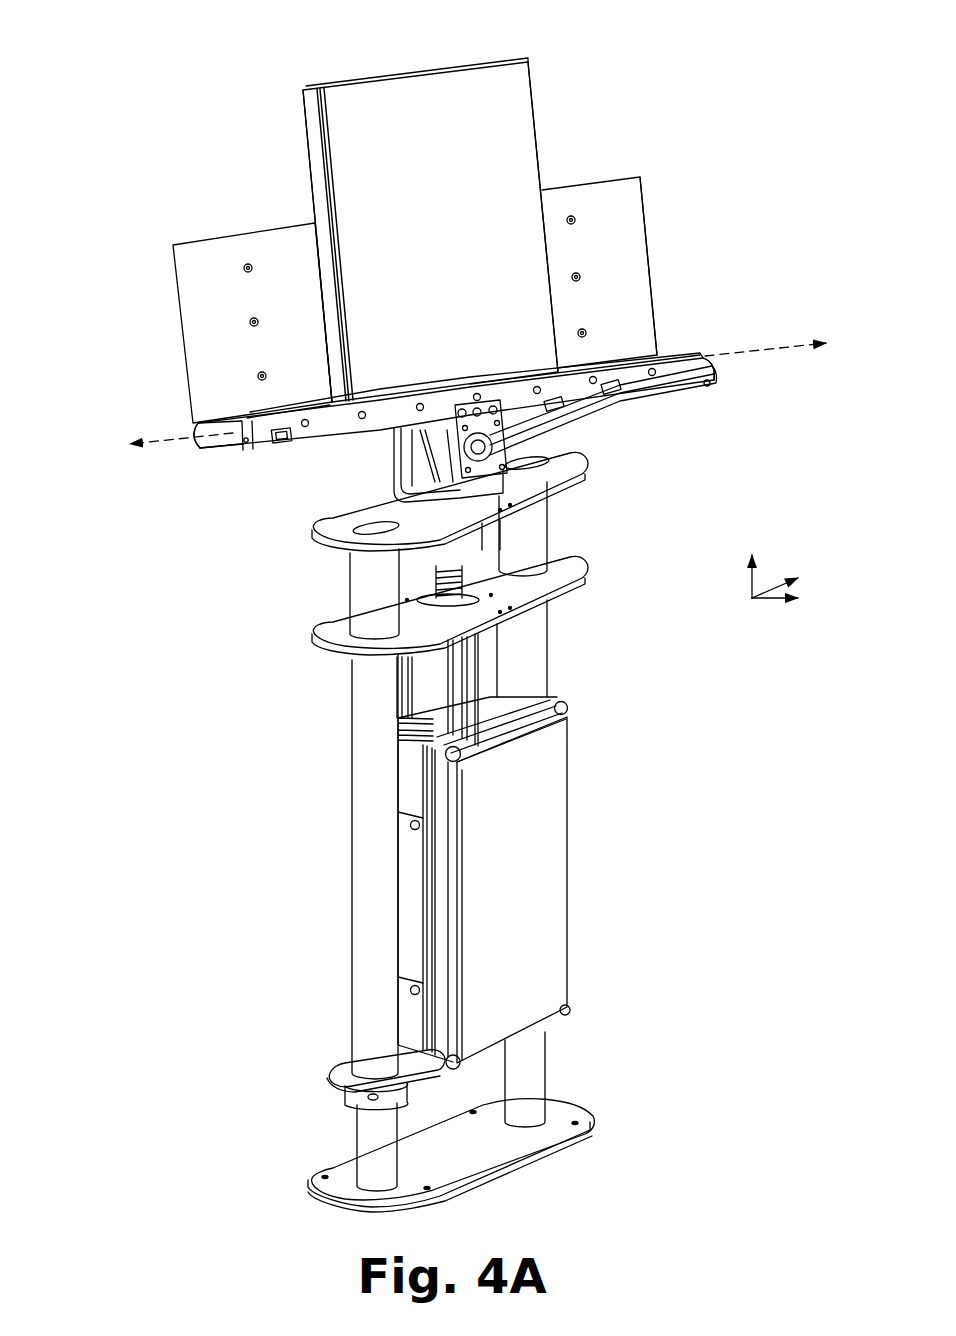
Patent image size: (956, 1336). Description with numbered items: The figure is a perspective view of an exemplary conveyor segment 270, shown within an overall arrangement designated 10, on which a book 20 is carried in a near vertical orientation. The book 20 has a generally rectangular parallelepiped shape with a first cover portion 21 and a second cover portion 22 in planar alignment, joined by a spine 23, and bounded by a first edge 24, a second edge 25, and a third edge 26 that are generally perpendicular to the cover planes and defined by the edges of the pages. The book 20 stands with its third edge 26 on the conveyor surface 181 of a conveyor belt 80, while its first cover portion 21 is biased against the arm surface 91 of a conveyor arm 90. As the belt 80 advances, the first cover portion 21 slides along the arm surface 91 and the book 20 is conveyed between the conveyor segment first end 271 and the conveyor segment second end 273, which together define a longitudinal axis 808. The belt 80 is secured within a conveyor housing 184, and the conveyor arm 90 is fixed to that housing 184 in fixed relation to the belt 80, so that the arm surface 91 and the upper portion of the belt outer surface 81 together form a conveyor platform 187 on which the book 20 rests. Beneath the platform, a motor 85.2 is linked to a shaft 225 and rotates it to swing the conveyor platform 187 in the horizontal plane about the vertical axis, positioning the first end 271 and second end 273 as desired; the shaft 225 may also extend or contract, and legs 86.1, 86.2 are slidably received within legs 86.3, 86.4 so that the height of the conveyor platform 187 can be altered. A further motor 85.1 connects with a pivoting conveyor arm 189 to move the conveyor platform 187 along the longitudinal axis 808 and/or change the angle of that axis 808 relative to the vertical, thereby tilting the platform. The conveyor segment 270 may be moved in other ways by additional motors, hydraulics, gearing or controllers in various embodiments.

The mounting apparatus 10 is at (686, 46).
The book 20 is at (420, 201).
The first cover portion 21 is at (304, 135).
The second cover portion 22 is at (410, 108).
The spine 23 is at (313, 102).
The first edge 24 is at (480, 62).
The second edge 25 is at (533, 104).
The third edge 26 is at (448, 395).
The conveyor belt 80 is at (227, 446).
The belt outer surface 81 is at (225, 423).
The motor 85.1 is at (578, 472).
The motor 85.2 is at (567, 587).
The leg 86.1 is at (365, 586).
The leg 86.2 is at (535, 533).
The leg 86.3 is at (365, 718).
The leg 86.4 is at (527, 655).
The conveyor arm 90 is at (625, 241).
The arm surface 91 is at (623, 212).
The conveyor surface 181 is at (228, 423).
The conveyor housing 184 is at (627, 373).
The conveyor platform 187 is at (655, 241).
The conveyor arm 189 is at (627, 407).
The shaft 225 is at (350, 615).
The conveyor segment 270 is at (191, 310).
The conveyor segment first end 271 is at (208, 438).
The conveyor segment second end 273 is at (700, 353).
The longitudinal axis 808 is at (157, 436).